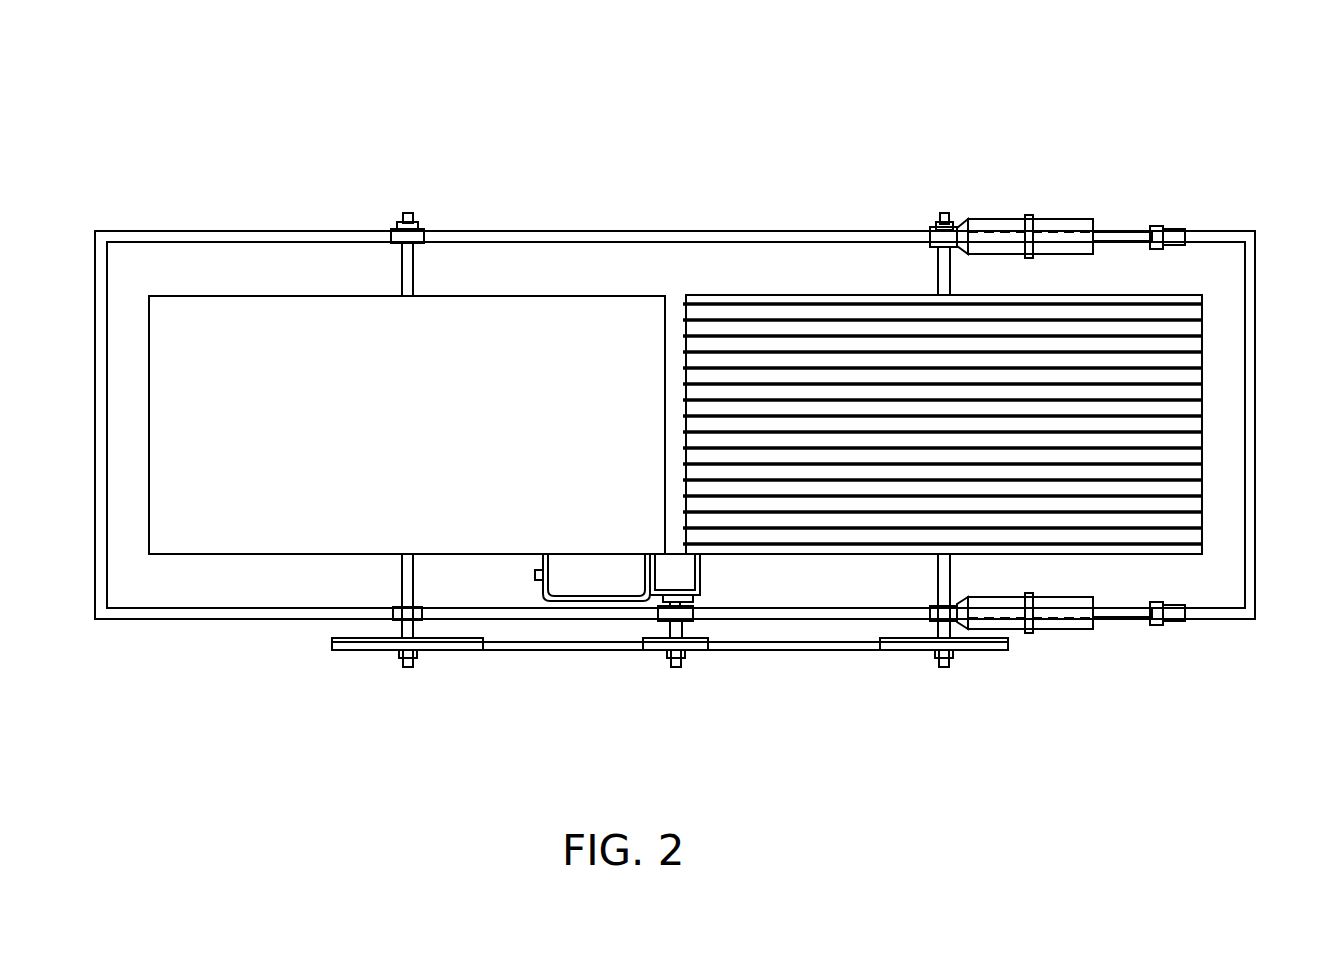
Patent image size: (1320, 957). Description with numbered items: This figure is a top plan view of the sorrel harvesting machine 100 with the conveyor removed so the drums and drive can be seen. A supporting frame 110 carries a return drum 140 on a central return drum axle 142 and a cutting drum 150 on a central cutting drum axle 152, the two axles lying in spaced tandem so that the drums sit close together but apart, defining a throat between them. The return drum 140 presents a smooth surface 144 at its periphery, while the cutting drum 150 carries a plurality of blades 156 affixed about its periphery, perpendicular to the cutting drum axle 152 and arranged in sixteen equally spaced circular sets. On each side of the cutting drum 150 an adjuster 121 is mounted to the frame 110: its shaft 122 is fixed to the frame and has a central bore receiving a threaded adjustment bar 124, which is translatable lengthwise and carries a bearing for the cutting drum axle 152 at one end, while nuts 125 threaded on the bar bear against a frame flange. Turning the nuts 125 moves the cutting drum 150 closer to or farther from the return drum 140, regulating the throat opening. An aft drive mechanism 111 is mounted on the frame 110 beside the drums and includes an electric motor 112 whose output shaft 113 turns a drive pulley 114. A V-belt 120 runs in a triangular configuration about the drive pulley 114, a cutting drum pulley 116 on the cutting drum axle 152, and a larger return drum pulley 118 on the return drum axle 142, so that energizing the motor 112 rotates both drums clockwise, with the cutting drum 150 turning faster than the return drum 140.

The sorrel harvesting machine 100 is at (428, 119).
The supporting frame 110 is at (259, 231).
The drive mechanism 111 is at (670, 710).
The electric motor 112 is at (579, 602).
The output shaft 113 is at (685, 628).
The drive pulley 114 is at (652, 651).
The cutting drum pulley 116 is at (905, 651).
The return drum pulley 118 is at (352, 651).
The V-belt 120 is at (782, 648).
The adjuster 121 is at (1119, 428).
The shaft 122 is at (1068, 219).
The threaded adjustment bar 124 is at (1185, 237).
The nuts 125 is at (1163, 228).
The return drum 140 is at (247, 556).
The central return drum axle 142 is at (397, 566).
The smooth surface 144 is at (399, 441).
The cutting drum 150 is at (1205, 520).
The central cutting drum axle 152 is at (936, 580).
The blades 156 is at (1195, 345).